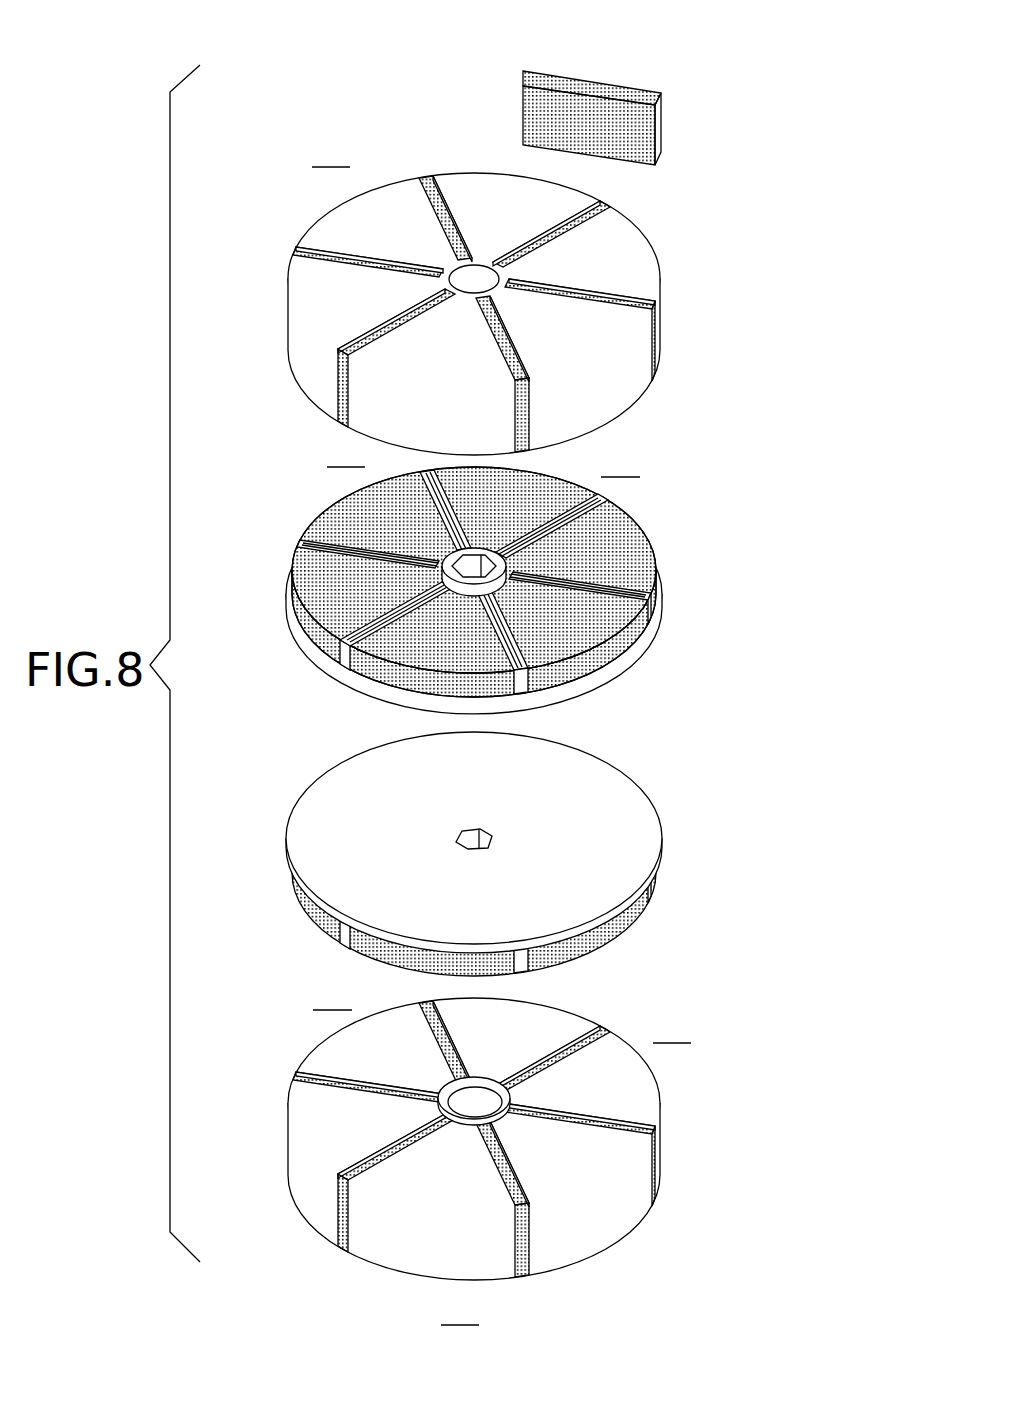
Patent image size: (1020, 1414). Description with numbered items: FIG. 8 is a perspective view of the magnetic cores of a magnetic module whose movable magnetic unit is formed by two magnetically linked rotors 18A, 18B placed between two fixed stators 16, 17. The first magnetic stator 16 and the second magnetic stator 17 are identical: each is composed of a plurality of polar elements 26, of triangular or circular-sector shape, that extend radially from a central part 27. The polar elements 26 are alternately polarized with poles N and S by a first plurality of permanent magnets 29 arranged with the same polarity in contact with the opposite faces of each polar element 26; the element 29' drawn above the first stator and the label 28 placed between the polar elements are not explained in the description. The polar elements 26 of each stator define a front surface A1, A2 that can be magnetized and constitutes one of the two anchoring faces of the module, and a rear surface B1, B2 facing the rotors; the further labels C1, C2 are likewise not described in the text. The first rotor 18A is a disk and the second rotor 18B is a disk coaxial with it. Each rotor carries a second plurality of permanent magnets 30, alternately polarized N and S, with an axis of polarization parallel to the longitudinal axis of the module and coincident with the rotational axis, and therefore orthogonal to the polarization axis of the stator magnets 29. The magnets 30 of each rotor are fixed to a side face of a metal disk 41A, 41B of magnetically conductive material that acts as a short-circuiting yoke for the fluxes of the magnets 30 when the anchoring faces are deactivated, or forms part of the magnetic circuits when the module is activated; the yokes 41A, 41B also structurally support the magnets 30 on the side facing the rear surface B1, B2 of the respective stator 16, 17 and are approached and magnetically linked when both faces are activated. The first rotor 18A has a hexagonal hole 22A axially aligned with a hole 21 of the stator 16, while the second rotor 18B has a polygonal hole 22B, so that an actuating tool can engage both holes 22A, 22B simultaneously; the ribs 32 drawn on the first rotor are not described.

The first magnetic stator 16 is at (493, 307).
The second magnetic stator 17 is at (439, 1162).
The first rotor 18A is at (491, 595).
The second rotor 18B is at (485, 888).
The hole 21 is at (478, 282).
The hexagonal hole 22A is at (473, 570).
The polygonal hole 22B is at (472, 838).
The polar elements 26 is at (487, 714).
The central part 27 is at (505, 258).
The slot between magnets 28 is at (629, 306).
The permanent magnets 29 is at (491, 789).
The spacer (detached) 29' is at (598, 84).
The permanent magnets 30 is at (491, 756).
The rib 32 is at (540, 572).
The metal disk 41A is at (637, 654).
The metal disk 41B is at (627, 823).
The front surface A1 is at (331, 152).
The rear surface B1 is at (346, 452).
The magnet position C1 is at (620, 462).
The front surface A2 is at (460, 1310).
The rear surface B2 is at (672, 1028).
The magnet position C2 is at (332, 995).